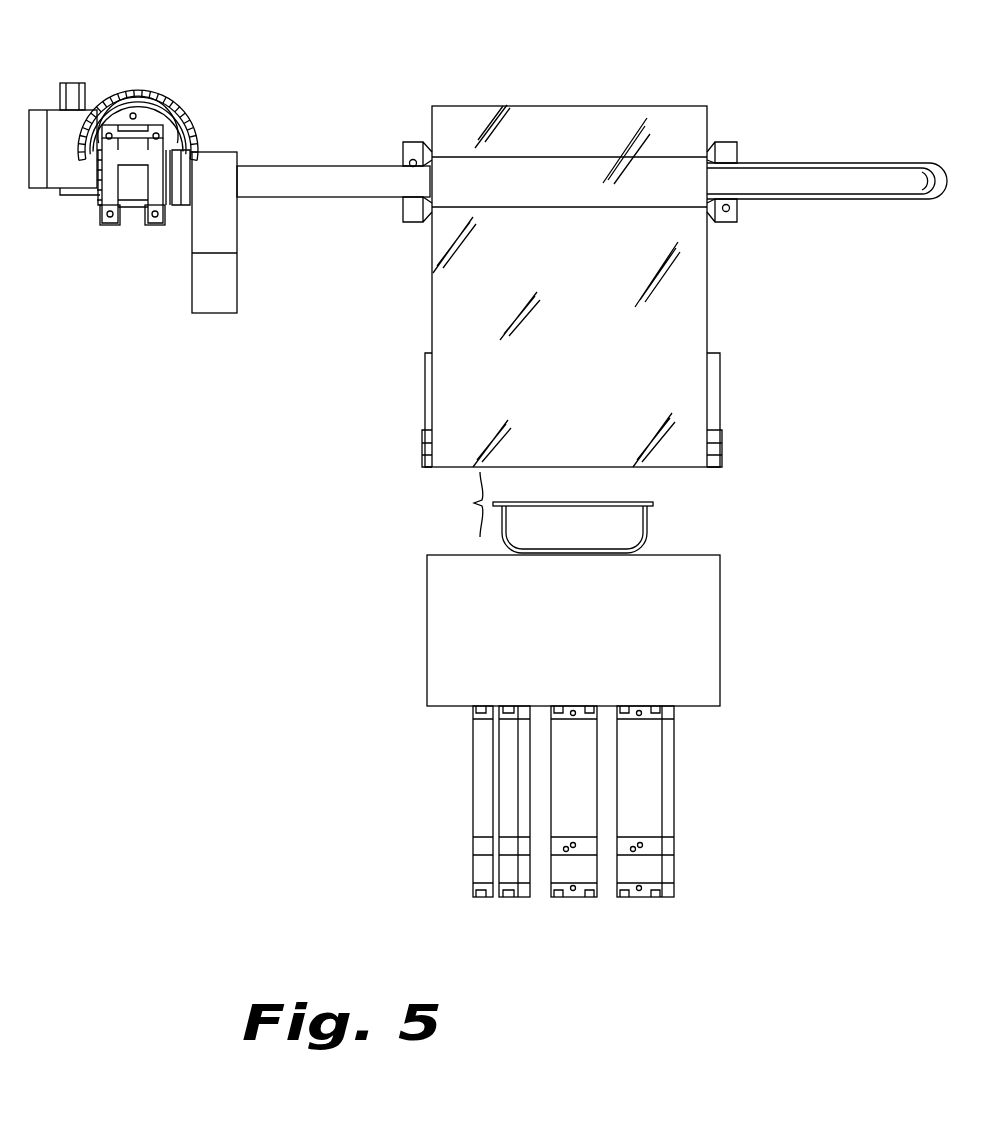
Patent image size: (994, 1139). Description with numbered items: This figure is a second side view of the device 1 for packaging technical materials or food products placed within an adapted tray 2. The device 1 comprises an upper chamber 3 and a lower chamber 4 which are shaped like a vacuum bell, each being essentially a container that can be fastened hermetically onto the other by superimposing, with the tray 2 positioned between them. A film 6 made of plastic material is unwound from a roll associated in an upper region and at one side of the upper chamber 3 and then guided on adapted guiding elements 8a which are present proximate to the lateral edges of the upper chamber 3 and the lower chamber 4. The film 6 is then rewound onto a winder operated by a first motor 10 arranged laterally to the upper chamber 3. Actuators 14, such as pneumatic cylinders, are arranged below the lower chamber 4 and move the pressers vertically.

The device 1 is at (765, 118).
The tray 2 is at (650, 540).
The upper chamber 3 is at (725, 388).
The lower chamber 4 is at (745, 632).
The film 6 is at (470, 322).
The guiding elements 8a is at (420, 452).
The first motor 10 is at (180, 90).
The actuators 14 is at (488, 818).